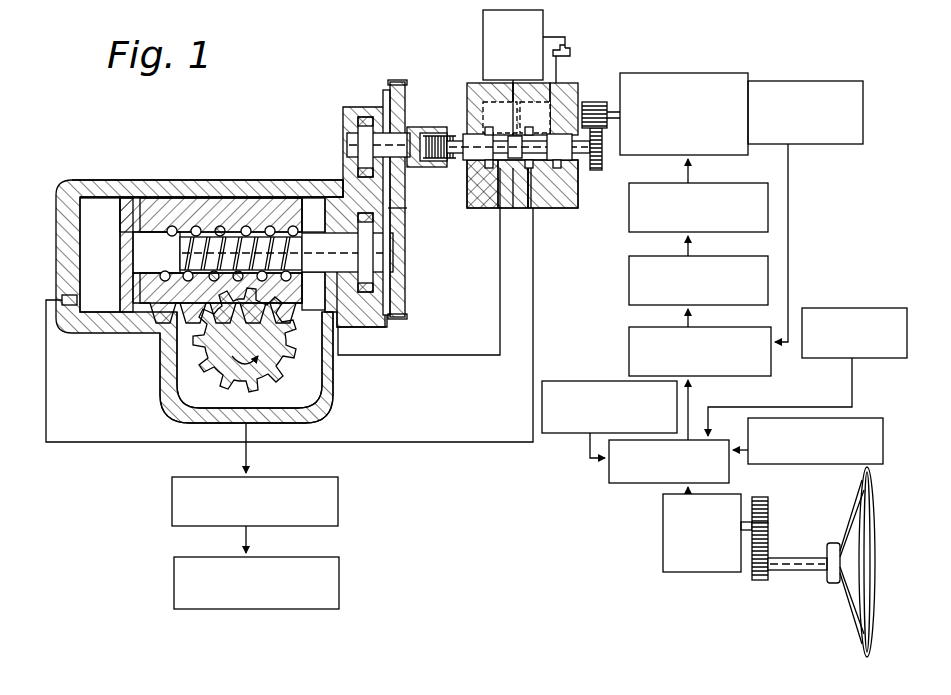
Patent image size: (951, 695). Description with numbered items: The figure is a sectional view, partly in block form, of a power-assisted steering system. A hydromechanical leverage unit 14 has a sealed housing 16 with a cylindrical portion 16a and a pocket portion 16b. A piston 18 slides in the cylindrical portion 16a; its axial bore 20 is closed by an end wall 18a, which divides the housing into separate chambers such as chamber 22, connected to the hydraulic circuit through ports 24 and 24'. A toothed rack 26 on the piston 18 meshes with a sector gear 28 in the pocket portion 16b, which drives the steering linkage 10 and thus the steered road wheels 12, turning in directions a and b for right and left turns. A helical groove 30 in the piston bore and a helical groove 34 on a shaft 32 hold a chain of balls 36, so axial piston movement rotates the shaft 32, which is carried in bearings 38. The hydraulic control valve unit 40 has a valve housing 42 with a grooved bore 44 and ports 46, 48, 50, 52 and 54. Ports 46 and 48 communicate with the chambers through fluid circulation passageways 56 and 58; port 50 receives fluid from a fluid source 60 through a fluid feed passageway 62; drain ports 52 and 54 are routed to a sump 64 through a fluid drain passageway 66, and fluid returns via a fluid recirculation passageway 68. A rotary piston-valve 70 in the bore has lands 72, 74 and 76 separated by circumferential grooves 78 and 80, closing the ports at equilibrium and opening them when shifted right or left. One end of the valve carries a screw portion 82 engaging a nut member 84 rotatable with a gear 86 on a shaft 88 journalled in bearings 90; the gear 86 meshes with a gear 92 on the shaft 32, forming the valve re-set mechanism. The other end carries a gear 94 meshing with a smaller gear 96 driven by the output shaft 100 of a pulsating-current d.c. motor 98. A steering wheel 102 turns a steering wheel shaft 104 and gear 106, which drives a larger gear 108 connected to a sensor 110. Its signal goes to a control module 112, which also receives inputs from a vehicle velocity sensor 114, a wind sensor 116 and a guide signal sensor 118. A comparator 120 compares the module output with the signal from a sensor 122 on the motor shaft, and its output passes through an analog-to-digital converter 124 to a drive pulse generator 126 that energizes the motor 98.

The steering linkage 10 is at (338, 503).
The steered road wheels 12 is at (340, 592).
The hydromechanical leverage unit 14 is at (253, 220).
The housing 16 is at (138, 337).
The cylindrical portion 16a is at (167, 180).
The pocket portion 16b is at (328, 410).
The piston 18 is at (193, 180).
The end wall 18a is at (118, 254).
The axial bore 20 is at (133, 262).
The chamber 22 is at (97, 207).
The port 24 is at (50, 281).
The port 24' is at (367, 311).
The toothed rack 26 is at (185, 300).
The sector gear 28 is at (205, 345).
The helical groove 30 is at (212, 230).
The shaft 32 is at (326, 225).
The helical groove 34 is at (238, 215).
The balls 36 is at (253, 226).
The bearings 38 is at (410, 293).
The hydraulic control valve unit 40 is at (522, 182).
The valve housing 42 is at (567, 212).
The grooved bore 44 is at (467, 163).
The port 46 is at (524, 192).
The port 48 is at (495, 172).
The port 50 is at (467, 88).
The port 52 is at (573, 93).
The port 54 is at (482, 130).
The fluid circulation passageway 56 is at (480, 442).
The fluid circulation passageway 58 is at (462, 355).
The fluid source 60 is at (483, 37).
The fluid feed passageway 62 is at (482, 88).
The sump 64 is at (571, 48).
The fluid drain passageway 66 is at (563, 78).
The fluid recirculation passageway 68 is at (541, 44).
The rotary piston-valve 70 is at (508, 170).
The land 72 is at (578, 183).
The land 74 is at (527, 212).
The land 76 is at (470, 167).
The circumferential groove 78 is at (572, 200).
The circumferential groove 80 is at (484, 167).
The screw portion 82 is at (400, 212).
The nut member 84 is at (417, 127).
The gear 86 is at (393, 82).
The shaft 88 is at (386, 92).
The bearings 90 is at (355, 107).
The gear 92 is at (410, 267).
The gear 94 is at (603, 165).
The gear 96 is at (600, 102).
The pulsating-current d.c. motor 98 is at (702, 73).
The output shaft 100 is at (612, 106).
The steering wheel 102 is at (842, 618).
The steering wheel shaft 104 is at (793, 571).
The gear 106 is at (753, 581).
The gear 108 is at (769, 510).
The sensor 110 is at (690, 572).
The control module 112 is at (630, 483).
The vehicle velocity sensor 114 is at (883, 440).
The wind sensor 116 is at (853, 308).
The guide signal sensor 118 is at (568, 433).
The comparator 120 is at (743, 376).
The sensor 122 is at (815, 145).
The analog-to-digital converter 124 is at (727, 305).
The drive pulse generator 126 is at (735, 232).